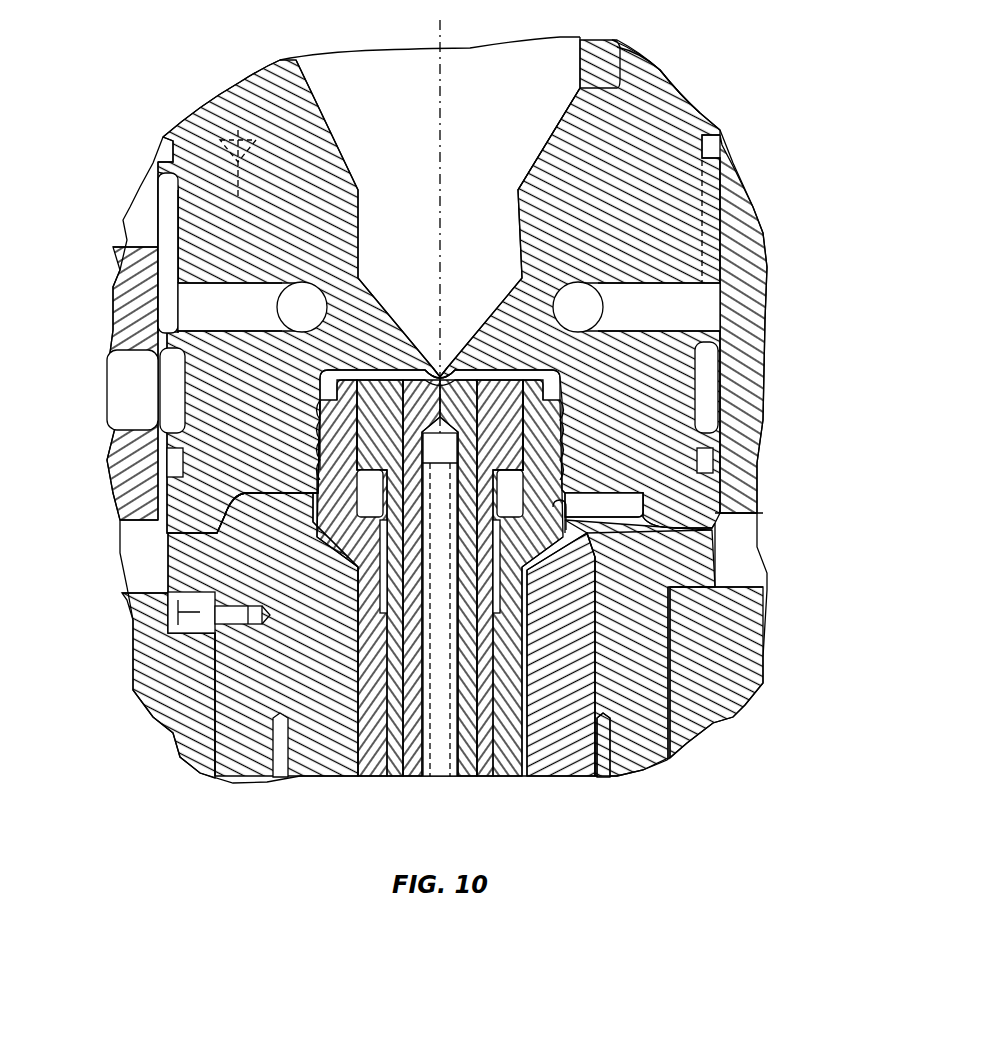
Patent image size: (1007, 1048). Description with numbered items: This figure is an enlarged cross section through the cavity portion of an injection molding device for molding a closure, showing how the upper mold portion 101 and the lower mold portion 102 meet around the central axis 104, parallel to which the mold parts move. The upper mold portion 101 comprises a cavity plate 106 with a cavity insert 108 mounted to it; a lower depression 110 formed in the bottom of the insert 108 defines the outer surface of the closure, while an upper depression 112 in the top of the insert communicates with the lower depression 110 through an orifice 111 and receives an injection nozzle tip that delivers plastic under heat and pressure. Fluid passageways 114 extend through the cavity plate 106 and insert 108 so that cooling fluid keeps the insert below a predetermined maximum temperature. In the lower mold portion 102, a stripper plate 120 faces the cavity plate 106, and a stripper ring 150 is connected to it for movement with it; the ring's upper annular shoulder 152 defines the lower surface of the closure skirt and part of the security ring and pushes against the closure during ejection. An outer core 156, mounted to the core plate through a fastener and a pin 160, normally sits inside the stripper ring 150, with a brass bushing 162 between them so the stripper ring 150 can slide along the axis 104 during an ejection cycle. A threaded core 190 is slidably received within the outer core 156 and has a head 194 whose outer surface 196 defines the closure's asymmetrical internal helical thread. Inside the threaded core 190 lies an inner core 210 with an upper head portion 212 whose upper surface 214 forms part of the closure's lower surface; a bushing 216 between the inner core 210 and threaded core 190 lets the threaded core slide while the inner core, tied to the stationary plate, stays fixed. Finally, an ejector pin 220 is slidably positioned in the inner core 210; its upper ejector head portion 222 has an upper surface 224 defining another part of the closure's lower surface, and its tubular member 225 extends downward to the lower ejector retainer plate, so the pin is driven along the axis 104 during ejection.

The upper mold portion 101 is at (768, 373).
The lower mold portion 102 is at (730, 722).
The axis 104 is at (438, 130).
The cavity plate 106 is at (747, 463).
The cavity insert 108 is at (660, 82).
The lower depression 110 is at (322, 428).
The orifice 111 is at (465, 358).
The upper depression 112 is at (568, 113).
The fluid passageways 114 is at (163, 360).
The stripper plate 120 is at (747, 667).
The stripper ring 150 is at (640, 648).
The upper annular shoulder 152 is at (617, 487).
The outer core 156 is at (561, 654).
The pin 160 is at (568, 507).
The bushing 162 is at (603, 770).
The threaded core 190 is at (357, 563).
The head 194 is at (313, 507).
The outer surface 196 is at (316, 472).
The inner core 210 is at (397, 703).
The upper head portion 212 is at (408, 413).
The upper surface 214 is at (503, 373).
The bushing 216 is at (502, 638).
The ejector pin 220 is at (413, 770).
The upper ejector head portion 222 is at (473, 413).
The upper surface 224 is at (397, 350).
The tubular member 225 is at (472, 768).